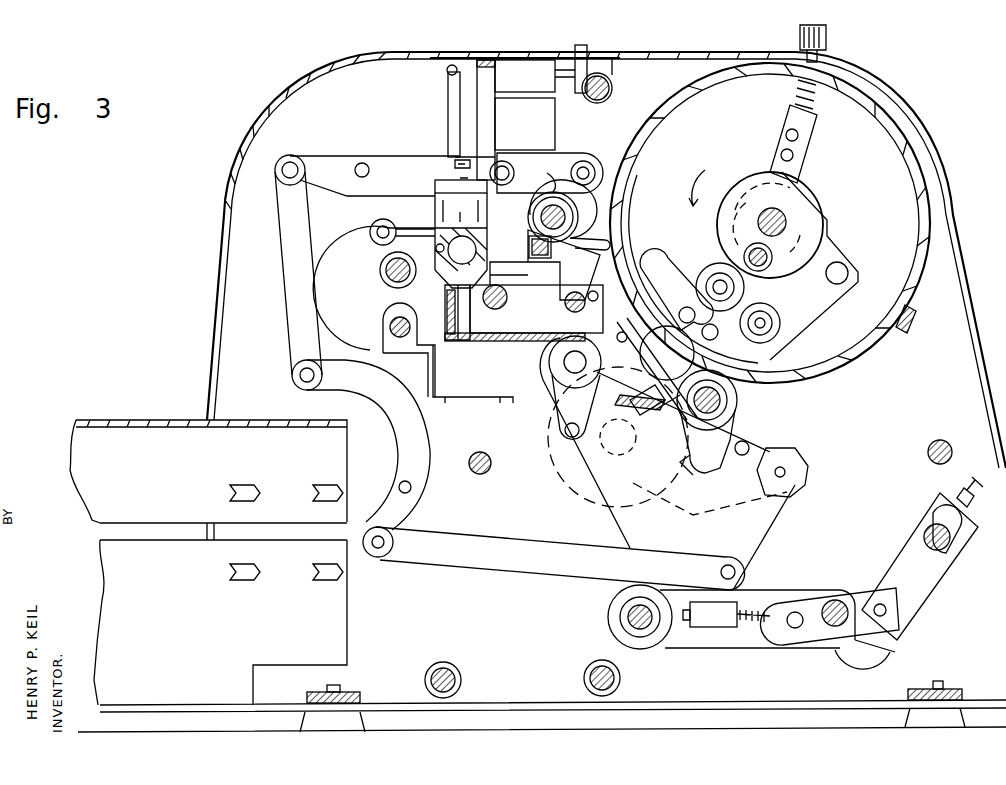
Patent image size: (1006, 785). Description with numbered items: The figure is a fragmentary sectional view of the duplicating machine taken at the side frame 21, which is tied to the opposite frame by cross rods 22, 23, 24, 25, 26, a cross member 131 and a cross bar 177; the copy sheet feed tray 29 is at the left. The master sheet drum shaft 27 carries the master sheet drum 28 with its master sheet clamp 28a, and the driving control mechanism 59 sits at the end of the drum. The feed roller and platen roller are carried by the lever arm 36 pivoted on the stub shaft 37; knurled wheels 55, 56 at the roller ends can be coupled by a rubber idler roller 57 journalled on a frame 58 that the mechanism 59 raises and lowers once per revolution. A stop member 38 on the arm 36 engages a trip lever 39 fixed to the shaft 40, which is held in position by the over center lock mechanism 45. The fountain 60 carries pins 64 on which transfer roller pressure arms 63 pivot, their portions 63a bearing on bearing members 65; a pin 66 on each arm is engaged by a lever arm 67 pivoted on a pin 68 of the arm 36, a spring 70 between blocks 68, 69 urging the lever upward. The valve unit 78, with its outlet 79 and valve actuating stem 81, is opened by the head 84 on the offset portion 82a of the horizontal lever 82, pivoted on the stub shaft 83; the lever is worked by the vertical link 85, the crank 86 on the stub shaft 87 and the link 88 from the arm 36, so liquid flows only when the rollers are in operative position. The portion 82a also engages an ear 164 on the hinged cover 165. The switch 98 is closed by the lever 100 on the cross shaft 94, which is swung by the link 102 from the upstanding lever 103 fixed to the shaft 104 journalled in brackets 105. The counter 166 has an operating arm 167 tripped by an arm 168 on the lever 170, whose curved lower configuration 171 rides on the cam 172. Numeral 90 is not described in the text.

The hinged cover 165 is at (262, 125).
The side frame 21 is at (530, 625).
The cross member 131 is at (355, 695).
The cross bar 177 is at (963, 692).
The cross rod 23 is at (461, 680).
The cross rod 22 is at (620, 678).
The cross rod 24 is at (491, 460).
The copy sheet feed tray 29 is at (180, 424).
The vertical link 85 is at (308, 265).
The horizontal lever 82 is at (405, 158).
The stub shaft 83 is at (365, 163).
The offset portion 82a is at (452, 164).
The counter 166 is at (540, 81).
The arm 168 is at (450, 100).
The operating arm 167 is at (453, 66).
The ear 164 is at (472, 178).
The cross rod 25 is at (612, 91).
The lever 170 is at (548, 160).
The cam 172 is at (590, 165).
The curved lower configuration 171 is at (549, 176).
The lever 100 is at (580, 235).
The cross shaft 94 is at (537, 212).
The pressure arm portion 63a is at (540, 227).
The transfer roller pressure arm 63 is at (578, 251).
The bearing member 65 is at (528, 246).
The valve unit engaging head 84 is at (472, 193).
The link 102 is at (410, 230).
The valve unit 78 is at (429, 250).
The upstanding lever 103 is at (345, 305).
The screw 90 is at (408, 272).
The shaft 104 is at (390, 325).
The bracket 105 is at (400, 345).
The switch 98 is at (540, 280).
The pin 64 is at (592, 292).
The outlet 79 is at (450, 306).
The valve actuating stem 81 is at (462, 340).
The fountain 60 is at (502, 340).
The crank 86 is at (409, 417).
The stub shaft 87 is at (411, 485).
The link 88 is at (483, 561).
The lever arm 36 is at (695, 546).
The rubber idler roller 57 is at (568, 455).
The knurled wheel 55 is at (548, 362).
The stub shaft 37 is at (815, 480).
The frame 58 is at (655, 490).
The knurled wheel 56 is at (738, 402).
The pin 68 is at (742, 455).
The horizontal pin 66 is at (618, 333).
The lever arm 67 is at (648, 372).
The block 69 is at (645, 405).
The spring 70 is at (665, 408).
The master sheet drum 28 is at (912, 162).
The master sheet clamp 28a is at (908, 314).
The master sheet drum shaft 27 is at (770, 212).
The driving control mechanism 59 is at (698, 258).
The cross rod 26 is at (935, 548).
The shaft 40 is at (848, 613).
The trip lever 39 is at (778, 640).
The stop member 38 is at (748, 620).
The over center lock mechanism 45 is at (907, 634).